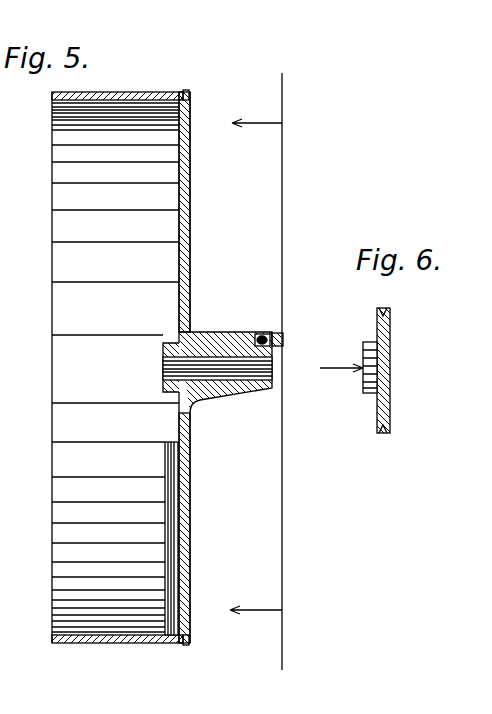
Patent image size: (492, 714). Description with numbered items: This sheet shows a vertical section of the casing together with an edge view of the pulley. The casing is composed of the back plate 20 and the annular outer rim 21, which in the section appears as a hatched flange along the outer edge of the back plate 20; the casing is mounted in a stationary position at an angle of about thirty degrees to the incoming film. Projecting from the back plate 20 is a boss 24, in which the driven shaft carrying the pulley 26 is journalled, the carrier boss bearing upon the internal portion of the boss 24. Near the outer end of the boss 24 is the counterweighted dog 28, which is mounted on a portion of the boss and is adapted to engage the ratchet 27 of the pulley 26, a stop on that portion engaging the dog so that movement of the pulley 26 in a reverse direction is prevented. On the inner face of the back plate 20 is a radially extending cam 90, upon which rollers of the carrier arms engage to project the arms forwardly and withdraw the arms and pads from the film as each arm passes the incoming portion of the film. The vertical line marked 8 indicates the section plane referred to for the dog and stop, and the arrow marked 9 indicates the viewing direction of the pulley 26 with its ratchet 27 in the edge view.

In FIG. 5, the back plate 20 is at (191, 148).
In FIG. 5, the annular outer rim 21 is at (149, 92).
In FIG. 5, the boss 24 is at (207, 333).
In FIG. 5, the counterweighted dog 28 is at (283, 333).
In FIG. 5, the radially extending cam 90 is at (165, 510).
In FIG. 5, the section line 8- 8 is at (256, 371).
In FIG. 6, the pulley 26 is at (390, 330).
In FIG. 6, the ratchet 27 is at (371, 342).
In FIG. 6, the section line 9 is at (341, 359).